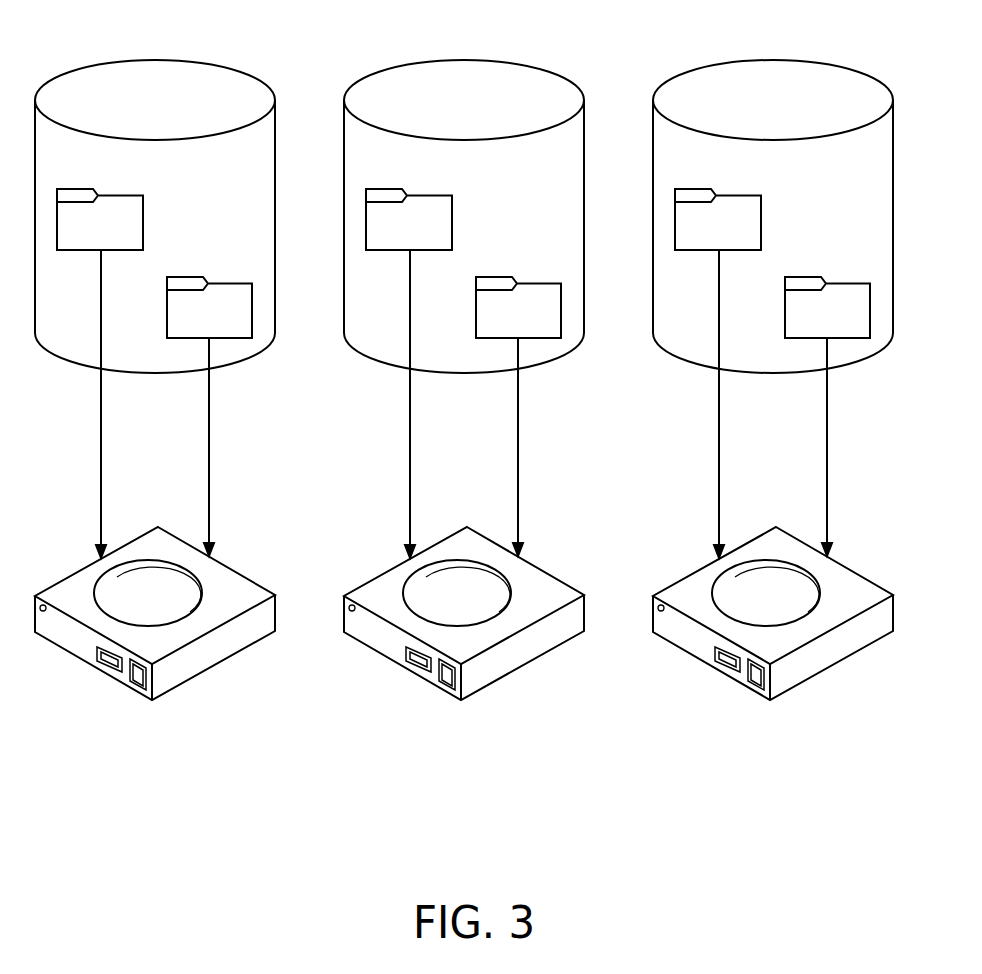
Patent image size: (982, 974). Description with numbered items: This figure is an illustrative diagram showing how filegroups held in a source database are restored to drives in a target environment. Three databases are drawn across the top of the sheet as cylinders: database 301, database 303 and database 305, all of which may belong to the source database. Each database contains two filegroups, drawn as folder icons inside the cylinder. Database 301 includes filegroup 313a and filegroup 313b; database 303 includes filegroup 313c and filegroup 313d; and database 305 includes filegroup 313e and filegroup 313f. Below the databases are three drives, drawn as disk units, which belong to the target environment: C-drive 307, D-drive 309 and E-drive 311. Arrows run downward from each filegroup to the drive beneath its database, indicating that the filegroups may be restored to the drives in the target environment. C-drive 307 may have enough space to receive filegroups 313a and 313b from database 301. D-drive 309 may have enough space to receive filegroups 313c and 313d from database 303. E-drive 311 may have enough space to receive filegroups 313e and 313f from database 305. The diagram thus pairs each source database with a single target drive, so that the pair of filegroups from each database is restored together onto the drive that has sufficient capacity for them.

The database 301 is at (155, 59).
The database 303 is at (464, 202).
The database 305 is at (773, 202).
The C-drive 307 is at (238, 578).
The D-drive 309 is at (489, 638).
The E-drive 311 is at (798, 638).
The filegroup 313a is at (78, 188).
The filegroup 313b is at (178, 277).
The filegroup 313c is at (417, 204).
The filegroup 313d is at (524, 293).
The filegroup 313e is at (727, 204).
The filegroup 313f is at (830, 293).